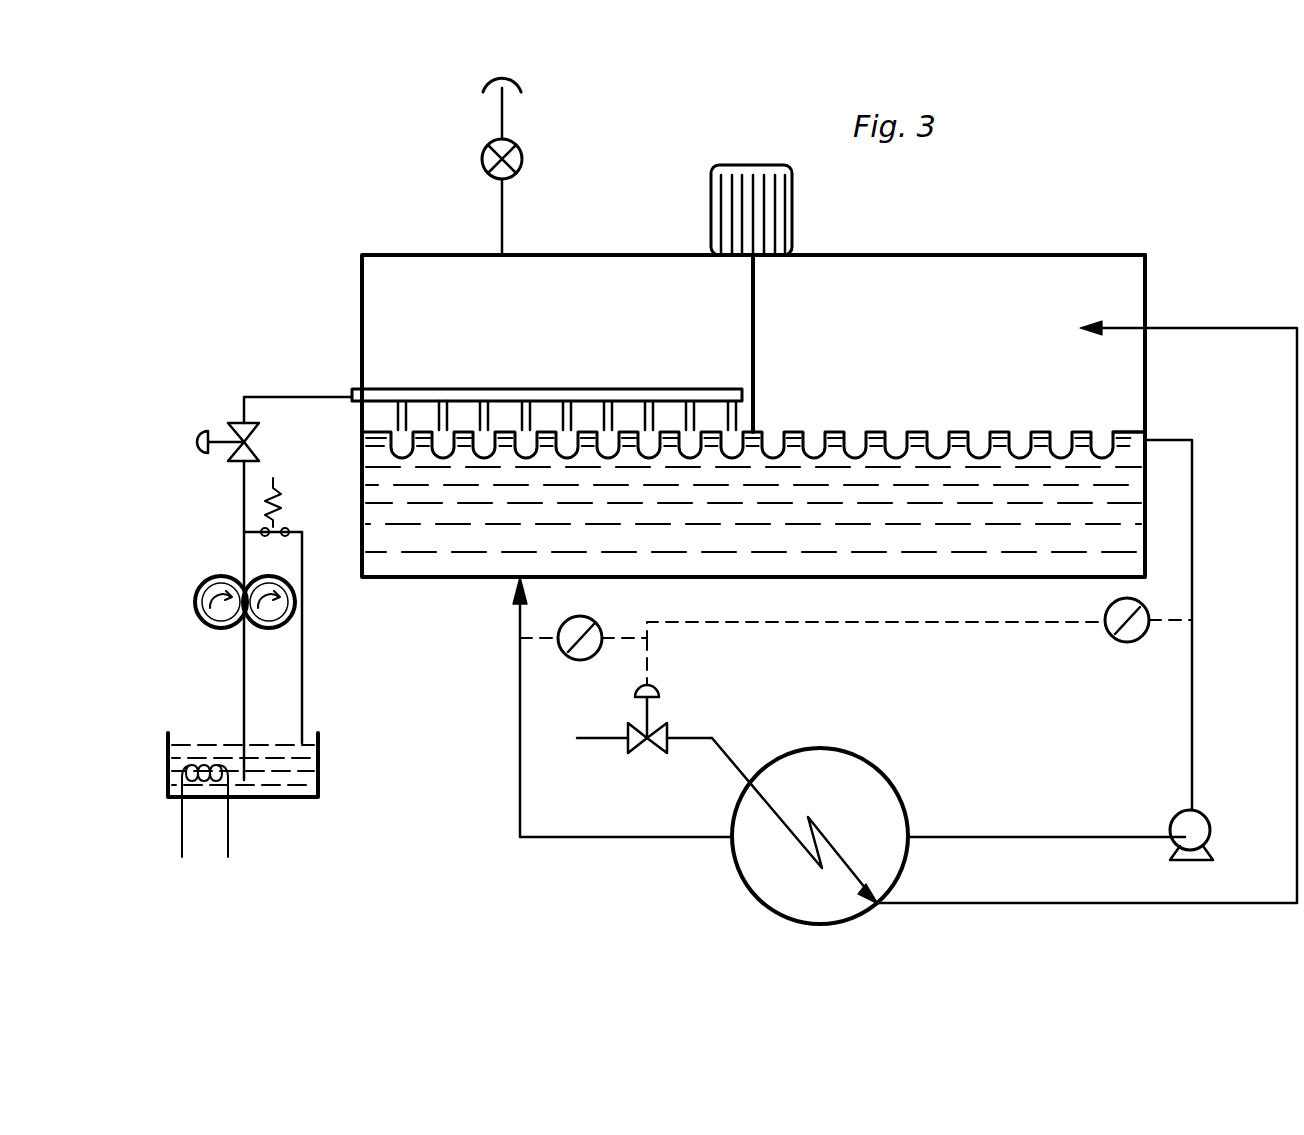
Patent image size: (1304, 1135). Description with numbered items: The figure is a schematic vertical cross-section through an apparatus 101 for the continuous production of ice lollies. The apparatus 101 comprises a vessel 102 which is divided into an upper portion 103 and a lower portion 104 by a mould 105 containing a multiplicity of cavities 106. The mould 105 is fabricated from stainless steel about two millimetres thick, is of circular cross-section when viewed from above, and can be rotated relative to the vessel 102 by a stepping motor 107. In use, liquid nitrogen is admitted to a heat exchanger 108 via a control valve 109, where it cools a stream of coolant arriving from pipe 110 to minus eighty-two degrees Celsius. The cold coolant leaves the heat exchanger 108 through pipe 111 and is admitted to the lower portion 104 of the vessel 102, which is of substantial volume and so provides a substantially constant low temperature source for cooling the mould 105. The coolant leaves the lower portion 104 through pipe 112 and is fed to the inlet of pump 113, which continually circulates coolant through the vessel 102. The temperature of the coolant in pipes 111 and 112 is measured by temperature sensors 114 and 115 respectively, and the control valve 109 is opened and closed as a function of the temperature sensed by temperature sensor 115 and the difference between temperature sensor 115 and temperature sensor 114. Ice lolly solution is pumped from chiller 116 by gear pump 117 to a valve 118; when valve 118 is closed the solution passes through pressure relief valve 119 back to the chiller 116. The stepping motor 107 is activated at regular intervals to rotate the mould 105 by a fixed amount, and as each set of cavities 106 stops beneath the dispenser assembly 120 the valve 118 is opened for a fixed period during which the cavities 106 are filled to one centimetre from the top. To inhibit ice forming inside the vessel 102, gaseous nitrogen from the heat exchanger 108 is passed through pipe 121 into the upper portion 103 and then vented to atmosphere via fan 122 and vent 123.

The apparatus 101 is at (345, 271).
The vessel 102 is at (1147, 292).
The upper portion 103 is at (905, 290).
The lower portion 104 is at (468, 543).
The mould 105 is at (1125, 431).
The cavities 106 is at (943, 437).
The stepping motor 107 is at (712, 203).
The heat exchanger 108 is at (863, 790).
The control valve 109 is at (663, 694).
The pipe 110 is at (990, 836).
The pipe 111 is at (595, 840).
The pipe 112 is at (1194, 462).
The pump 113 is at (1184, 820).
The temperature sensor 114 is at (588, 661).
The temperature sensor 115 is at (1134, 644).
The chiller 116 is at (319, 770).
The gear pump 117 is at (195, 601).
The valve 118 is at (205, 438).
The pressure relief valve 119 is at (286, 526).
The dispenser assembly 120 is at (555, 388).
The pipe 121 is at (985, 903).
The fan 122 is at (482, 157).
The vent 123 is at (503, 119).